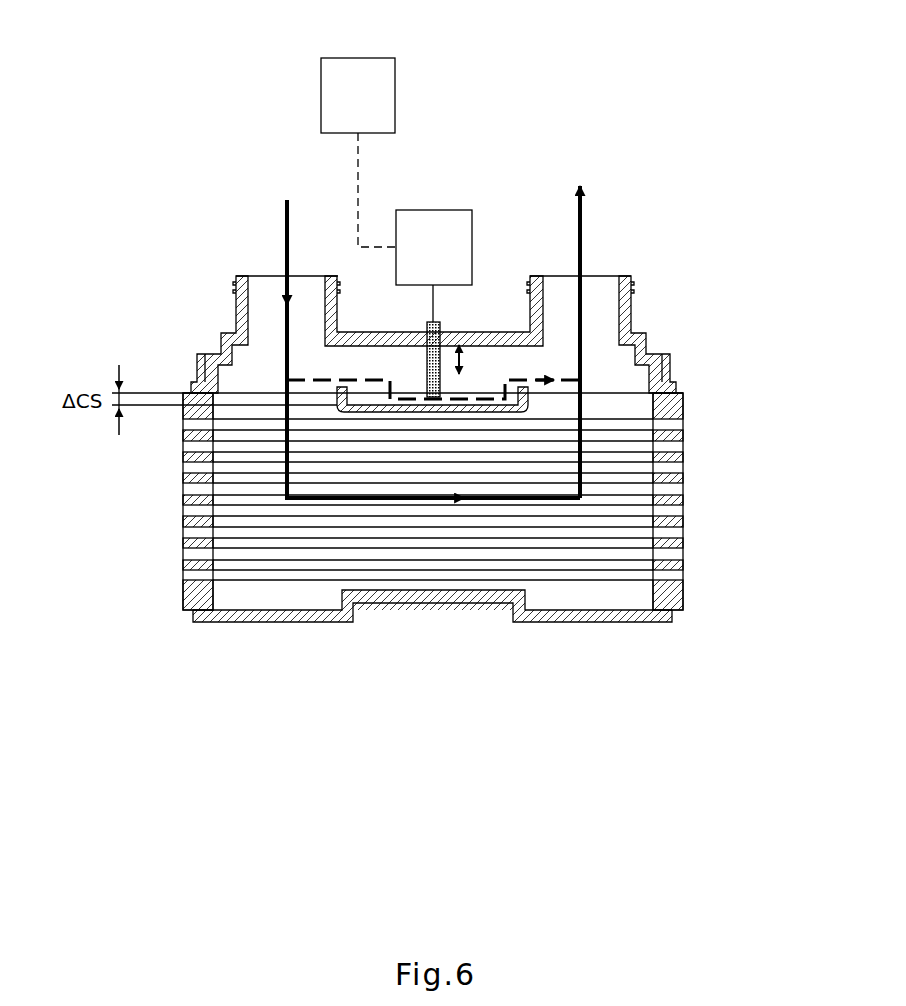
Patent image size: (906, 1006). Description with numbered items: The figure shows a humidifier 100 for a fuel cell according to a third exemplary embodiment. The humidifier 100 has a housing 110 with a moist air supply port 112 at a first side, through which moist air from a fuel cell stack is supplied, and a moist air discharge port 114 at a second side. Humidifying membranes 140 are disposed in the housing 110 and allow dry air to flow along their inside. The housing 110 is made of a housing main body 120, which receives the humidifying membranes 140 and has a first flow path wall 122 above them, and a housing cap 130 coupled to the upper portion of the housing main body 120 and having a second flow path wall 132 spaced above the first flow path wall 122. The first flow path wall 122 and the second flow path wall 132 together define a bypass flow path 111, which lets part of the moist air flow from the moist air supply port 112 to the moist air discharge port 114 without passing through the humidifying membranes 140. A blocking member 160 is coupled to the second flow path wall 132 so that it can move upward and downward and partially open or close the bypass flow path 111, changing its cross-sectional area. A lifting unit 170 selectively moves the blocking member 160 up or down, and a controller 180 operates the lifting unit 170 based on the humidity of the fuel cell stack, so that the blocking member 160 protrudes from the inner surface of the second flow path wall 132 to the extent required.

The humidifier 100 is at (251, 92).
The housing 110 is at (654, 333).
The bypass flow path 111 is at (432, 401).
The moist air supply port 112 is at (314, 276).
The moist air discharge port 114 is at (605, 276).
The housing main body 120 is at (668, 388).
The first flow path wall 122 is at (385, 410).
The housing cap 130 is at (625, 306).
The second flow path wall 132 is at (370, 340).
The humidifying membranes 140 is at (245, 423).
The blocking member 160 is at (443, 327).
The lifting unit 170 is at (433, 210).
The controller 180 is at (357, 58).